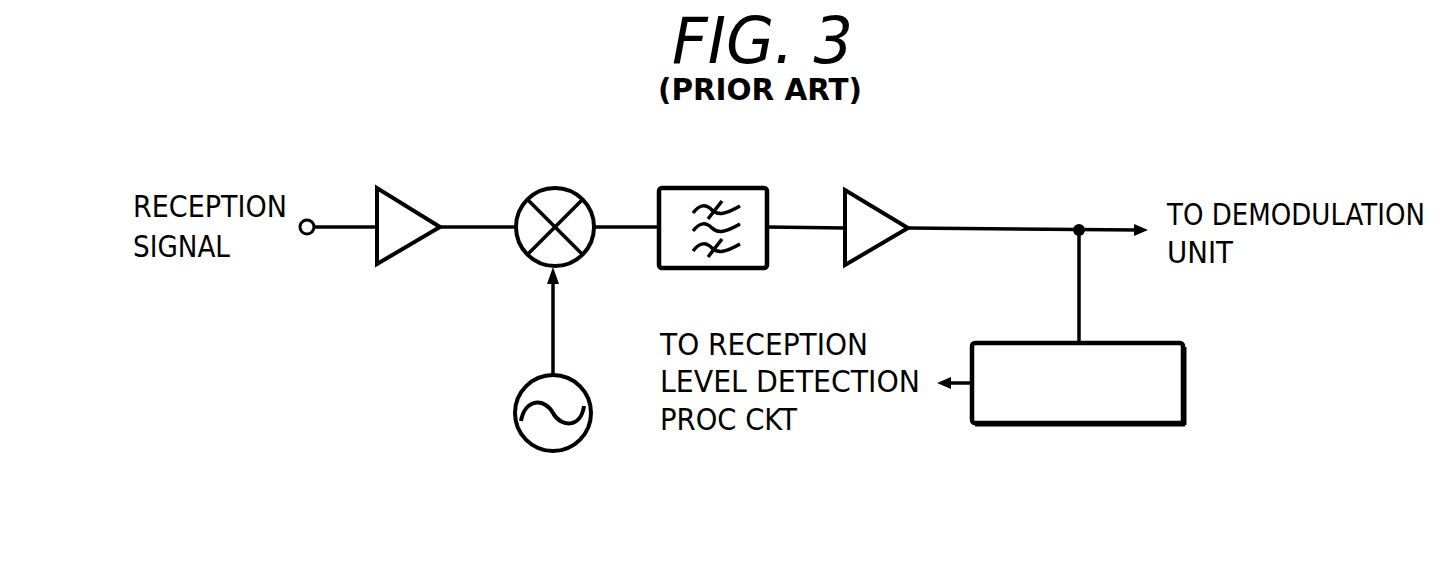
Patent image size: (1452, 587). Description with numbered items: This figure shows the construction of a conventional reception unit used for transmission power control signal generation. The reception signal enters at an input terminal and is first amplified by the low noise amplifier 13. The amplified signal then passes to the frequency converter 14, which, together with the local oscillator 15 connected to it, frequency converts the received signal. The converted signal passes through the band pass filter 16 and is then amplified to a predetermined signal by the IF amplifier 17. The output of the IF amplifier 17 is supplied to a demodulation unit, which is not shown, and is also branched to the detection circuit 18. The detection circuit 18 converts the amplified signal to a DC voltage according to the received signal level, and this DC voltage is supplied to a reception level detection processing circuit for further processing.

The low noise amplifier 13 is at (410, 201).
The frequency converter 14 is at (548, 188).
The local oscillator 15 is at (521, 421).
The band pass filter 16 is at (740, 190).
The IF amplifier 17 is at (870, 200).
The detection circuit 18 is at (1140, 424).